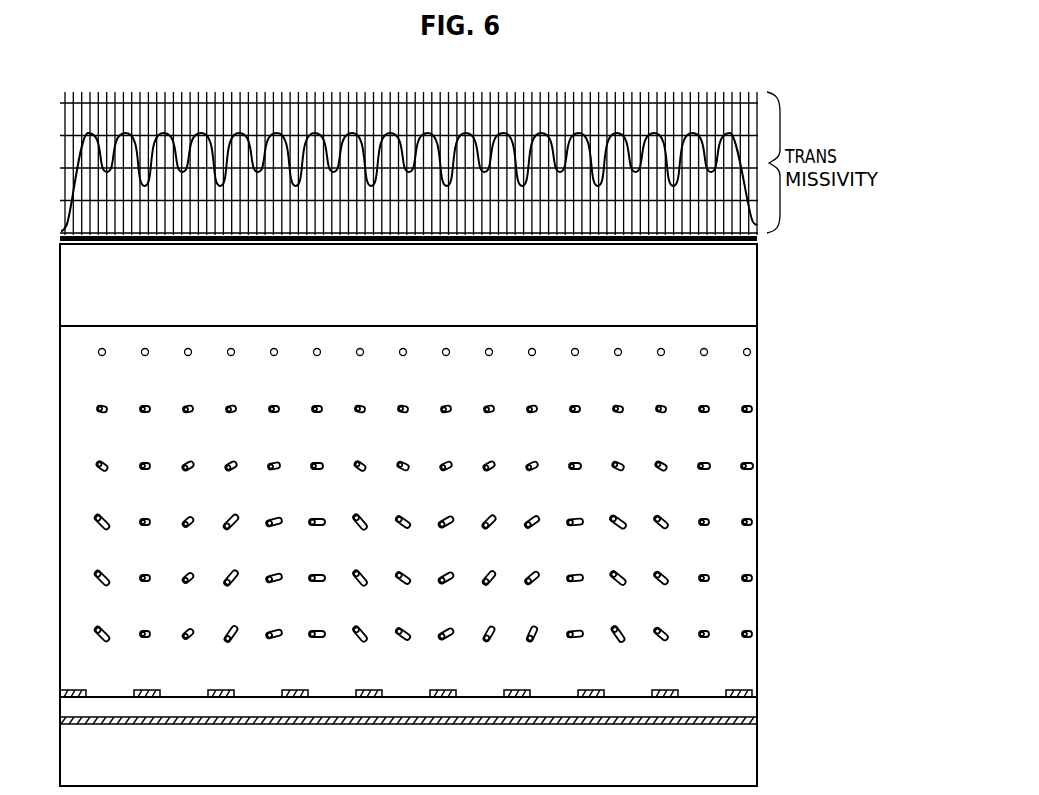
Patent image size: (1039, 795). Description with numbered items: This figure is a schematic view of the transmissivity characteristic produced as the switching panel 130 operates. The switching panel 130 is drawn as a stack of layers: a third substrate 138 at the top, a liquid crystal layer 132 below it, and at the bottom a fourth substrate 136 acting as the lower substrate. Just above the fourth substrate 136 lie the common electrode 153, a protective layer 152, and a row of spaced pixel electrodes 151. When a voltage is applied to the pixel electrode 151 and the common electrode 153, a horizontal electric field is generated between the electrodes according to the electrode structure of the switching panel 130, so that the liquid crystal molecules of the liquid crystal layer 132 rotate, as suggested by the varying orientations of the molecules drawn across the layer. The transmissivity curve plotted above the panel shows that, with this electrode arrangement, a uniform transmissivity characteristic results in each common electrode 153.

The switching panel 130 is at (828, 293).
The third substrate 138 is at (757, 285).
The liquid crystal layer 132 is at (757, 493).
The pixel electrode 151 is at (740, 690).
The protective layer 152 is at (757, 704).
The common electrode 153 is at (757, 720).
The fourth substrate 136 is at (750, 757).